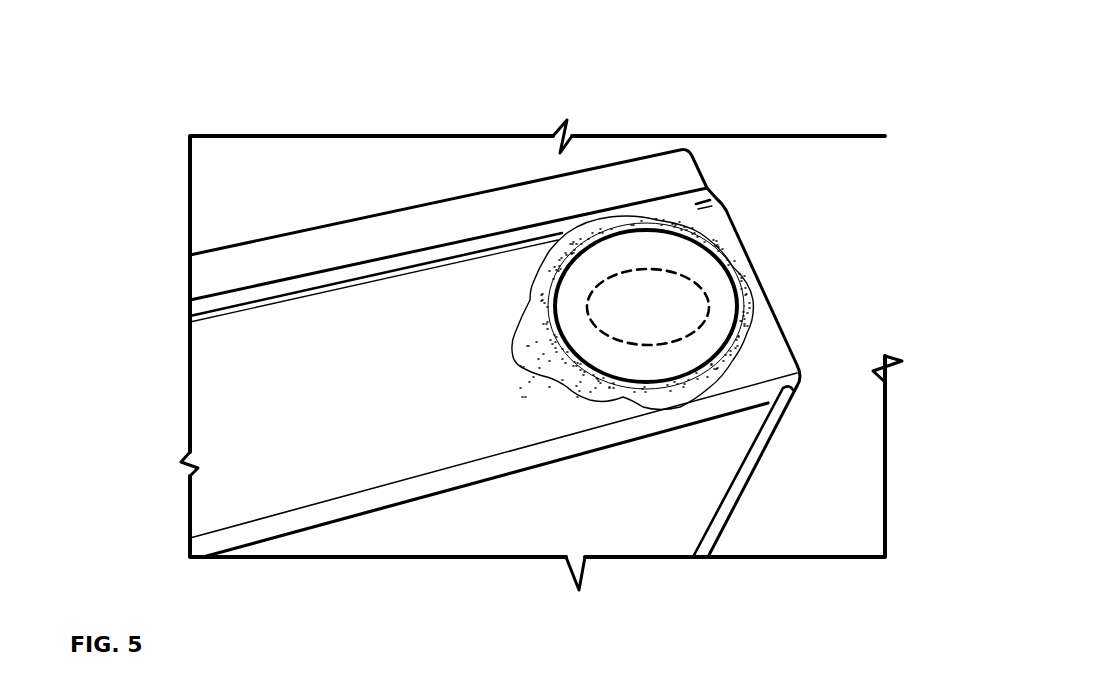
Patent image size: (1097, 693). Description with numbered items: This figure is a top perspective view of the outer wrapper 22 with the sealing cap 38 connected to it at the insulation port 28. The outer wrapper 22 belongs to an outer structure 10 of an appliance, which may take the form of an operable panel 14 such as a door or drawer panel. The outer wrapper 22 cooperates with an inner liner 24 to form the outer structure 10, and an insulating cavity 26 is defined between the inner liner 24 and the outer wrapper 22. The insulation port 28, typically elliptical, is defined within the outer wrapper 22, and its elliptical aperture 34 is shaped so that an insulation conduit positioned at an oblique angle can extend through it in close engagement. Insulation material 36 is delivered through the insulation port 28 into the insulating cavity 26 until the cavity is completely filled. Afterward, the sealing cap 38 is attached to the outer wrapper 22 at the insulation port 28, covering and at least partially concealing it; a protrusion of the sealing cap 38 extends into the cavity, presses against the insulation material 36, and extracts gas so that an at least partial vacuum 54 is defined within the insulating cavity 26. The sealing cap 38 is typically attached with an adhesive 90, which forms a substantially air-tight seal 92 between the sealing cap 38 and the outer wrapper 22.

The outer structure 10 is at (230, 247).
The operable panel 14 is at (400, 185).
The outer wrapper 22 is at (270, 383).
The inner liner 24 is at (618, 498).
The insulating cavity 26 is at (498, 490).
The insulation port 28 is at (690, 330).
The elliptical aperture 34 is at (648, 268).
The insulation material 36 is at (258, 465).
The sealing cap 38 is at (601, 231).
The at least partial vacuum 54 is at (424, 457).
The adhesive 90 is at (700, 376).
The substantially air-tight seal 92 is at (723, 238).